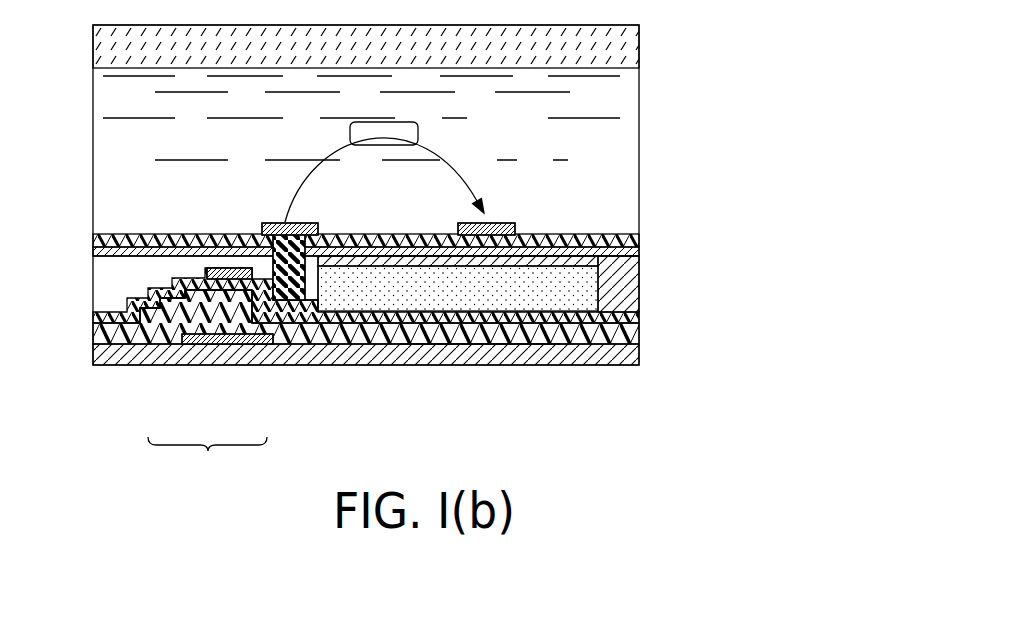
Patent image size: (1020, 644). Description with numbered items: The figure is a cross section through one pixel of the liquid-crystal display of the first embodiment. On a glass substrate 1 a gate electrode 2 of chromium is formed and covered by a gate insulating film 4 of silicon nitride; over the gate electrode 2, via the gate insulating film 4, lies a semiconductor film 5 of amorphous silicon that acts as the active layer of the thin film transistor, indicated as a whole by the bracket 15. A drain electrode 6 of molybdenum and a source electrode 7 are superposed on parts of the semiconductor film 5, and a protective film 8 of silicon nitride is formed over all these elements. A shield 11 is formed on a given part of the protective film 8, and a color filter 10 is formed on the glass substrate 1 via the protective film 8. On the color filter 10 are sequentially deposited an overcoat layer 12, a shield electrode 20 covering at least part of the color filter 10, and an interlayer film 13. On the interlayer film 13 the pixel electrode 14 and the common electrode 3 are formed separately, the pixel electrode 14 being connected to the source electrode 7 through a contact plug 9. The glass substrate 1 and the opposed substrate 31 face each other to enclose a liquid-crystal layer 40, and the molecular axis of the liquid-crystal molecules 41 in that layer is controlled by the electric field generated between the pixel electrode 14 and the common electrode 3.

The glass substrate 1 is at (640, 360).
The gate electrode 2 is at (233, 344).
The common electrode 3 is at (511, 223).
The gate insulating film 4 is at (640, 337).
The semiconductor film 5 is at (200, 307).
The drain electrode 6 is at (158, 323).
The source electrode 7 is at (287, 320).
The protective film 8 is at (640, 318).
The contact plug 9 is at (322, 300).
The color filter 10 is at (484, 330).
The shield 11 is at (215, 268).
The overcoat layer 12 is at (636, 274).
The interlayer film 13 is at (644, 242).
The pixel electrode 14 is at (320, 224).
The thin film transistor 15 is at (207, 462).
The shield electrode 20 is at (563, 235).
The opposed substrate 31 is at (640, 48).
The liquid-crystal layer 40 is at (640, 118).
The liquid-crystal molecules 41 is at (418, 130).